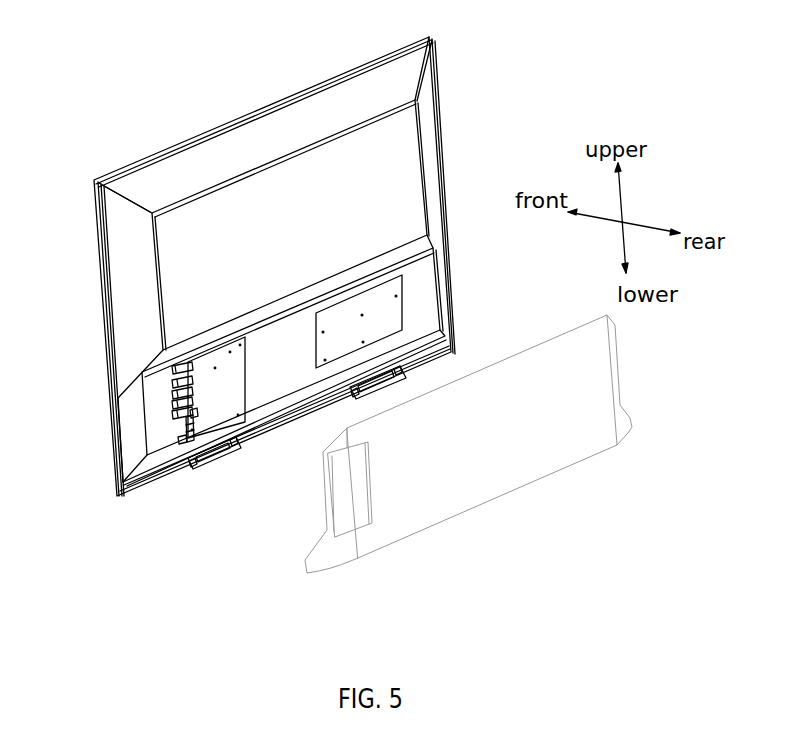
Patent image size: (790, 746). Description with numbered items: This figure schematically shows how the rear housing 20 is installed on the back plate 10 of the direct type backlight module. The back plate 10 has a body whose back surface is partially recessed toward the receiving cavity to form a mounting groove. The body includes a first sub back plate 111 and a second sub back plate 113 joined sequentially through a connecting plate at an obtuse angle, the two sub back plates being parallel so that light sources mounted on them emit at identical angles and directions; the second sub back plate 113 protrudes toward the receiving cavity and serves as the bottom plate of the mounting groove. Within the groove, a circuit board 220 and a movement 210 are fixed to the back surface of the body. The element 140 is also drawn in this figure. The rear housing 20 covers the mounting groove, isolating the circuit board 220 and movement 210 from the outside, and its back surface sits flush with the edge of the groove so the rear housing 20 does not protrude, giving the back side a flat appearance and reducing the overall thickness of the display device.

The back plate 10 is at (400, 53).
The first sub back plate 111 is at (398, 177).
The second sub back plate 113 is at (415, 278).
The circuit board 220 is at (397, 323).
The circuit board 140 is at (292, 350).
The movement 210 is at (233, 405).
The rear housing 20 is at (538, 348).